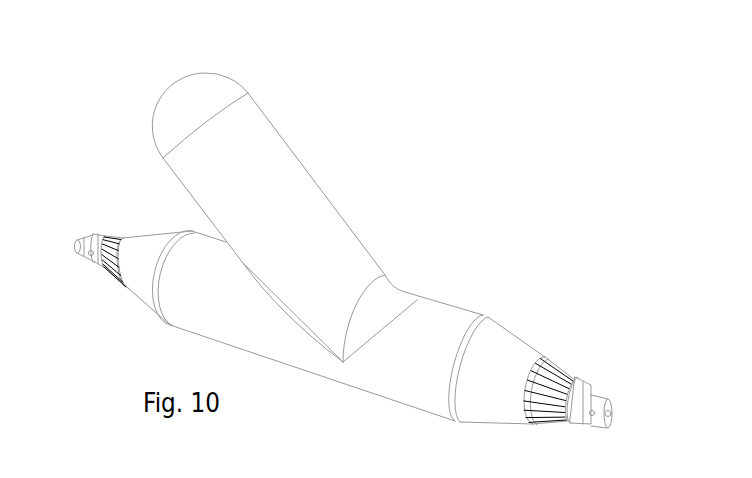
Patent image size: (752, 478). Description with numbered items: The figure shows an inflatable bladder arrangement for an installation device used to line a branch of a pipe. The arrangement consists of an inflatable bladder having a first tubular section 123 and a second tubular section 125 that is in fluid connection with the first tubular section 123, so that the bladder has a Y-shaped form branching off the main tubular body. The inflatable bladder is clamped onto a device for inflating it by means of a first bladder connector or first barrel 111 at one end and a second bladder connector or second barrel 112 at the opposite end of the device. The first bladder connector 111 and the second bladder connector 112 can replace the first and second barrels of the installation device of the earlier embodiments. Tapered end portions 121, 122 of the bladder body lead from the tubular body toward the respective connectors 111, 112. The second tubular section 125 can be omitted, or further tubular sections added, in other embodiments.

The first bladder connector 111 is at (105, 233).
The second bladder connector 112 is at (583, 363).
The first tapered end portion 121 is at (157, 246).
The second tapered end portion 122 is at (507, 338).
The first tubular section 123 is at (443, 317).
The second tubular section 125 is at (277, 160).